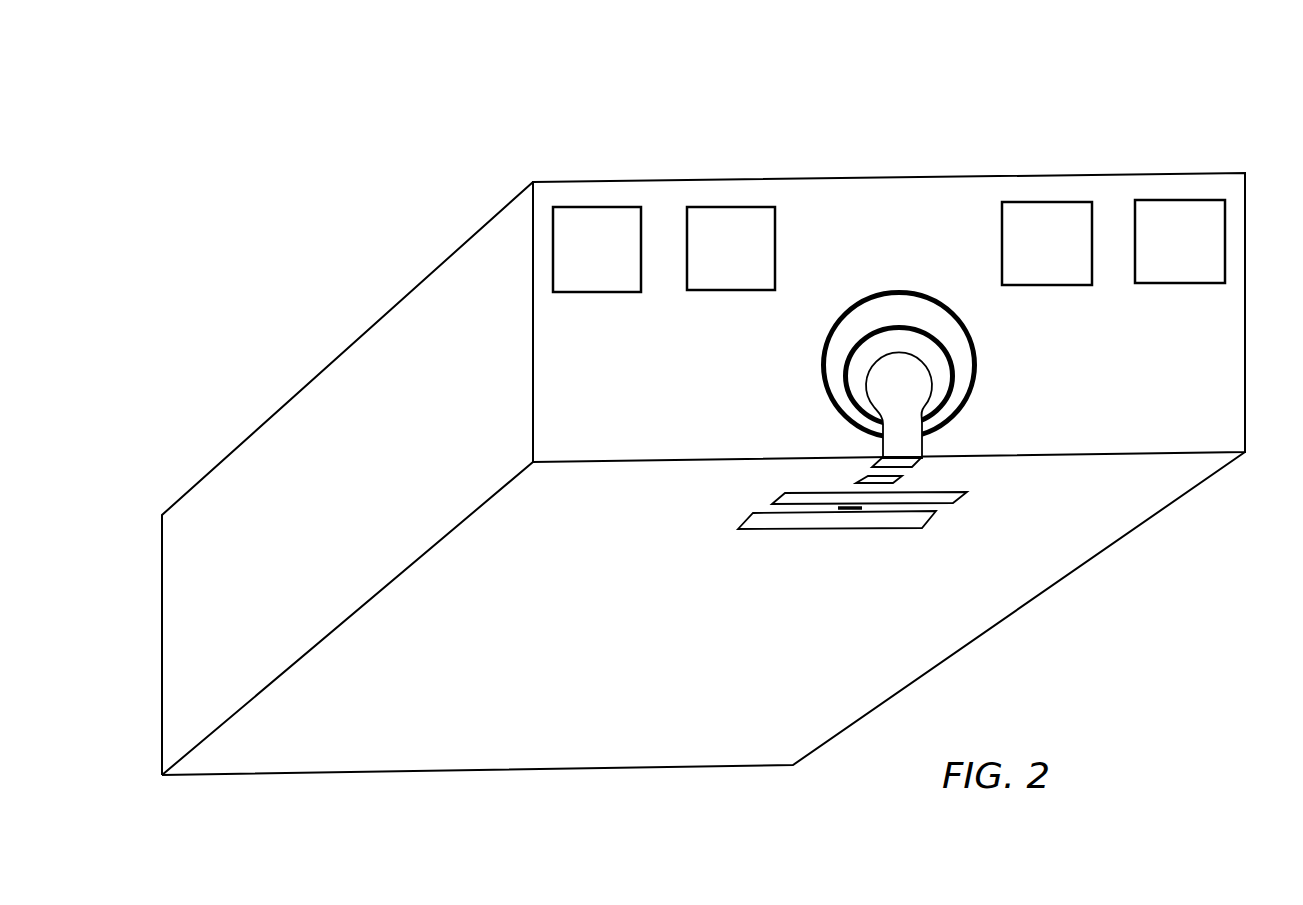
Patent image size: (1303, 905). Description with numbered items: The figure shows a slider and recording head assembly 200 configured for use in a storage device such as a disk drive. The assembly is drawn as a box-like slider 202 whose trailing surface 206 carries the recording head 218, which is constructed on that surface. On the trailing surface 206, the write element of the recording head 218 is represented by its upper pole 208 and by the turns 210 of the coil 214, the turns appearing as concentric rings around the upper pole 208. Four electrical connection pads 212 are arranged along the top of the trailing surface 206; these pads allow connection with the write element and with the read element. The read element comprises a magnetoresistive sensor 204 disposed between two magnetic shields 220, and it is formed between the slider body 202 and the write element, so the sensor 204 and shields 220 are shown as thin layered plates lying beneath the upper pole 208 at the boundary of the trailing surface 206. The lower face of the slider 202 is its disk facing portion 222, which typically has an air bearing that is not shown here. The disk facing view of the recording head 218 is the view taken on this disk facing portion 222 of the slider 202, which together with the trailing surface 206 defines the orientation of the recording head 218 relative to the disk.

The slider and recording head assembly 200 is at (703, 450).
The slider 202 is at (347, 477).
The magnetoresistive sensor 204 is at (848, 510).
The trailing surface 206 is at (893, 195).
The upper pole 208 is at (913, 450).
The turns 210 is at (877, 327).
The electrical connection pads 212 is at (1157, 205).
The coil 214 is at (934, 338).
The recording head 218 is at (837, 436).
The magnetic shields 220 is at (922, 518).
The disk facing portion 222 is at (948, 623).